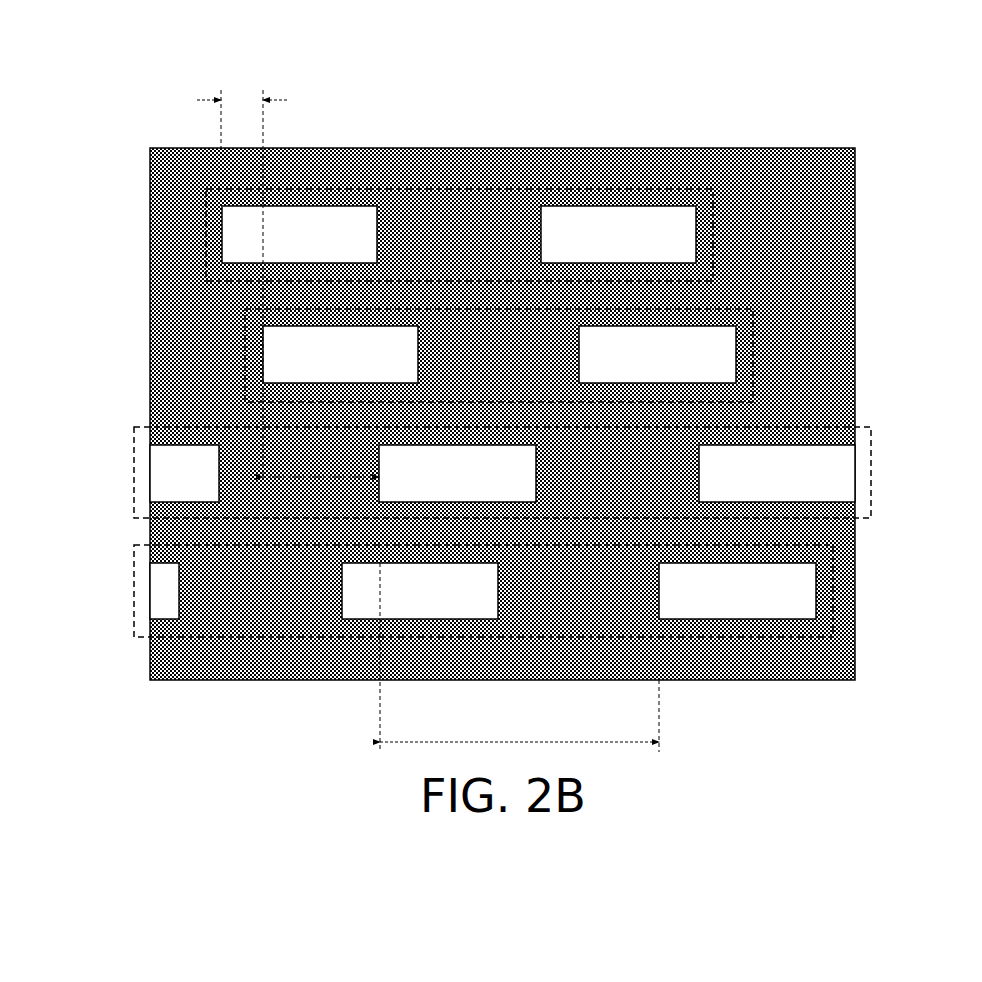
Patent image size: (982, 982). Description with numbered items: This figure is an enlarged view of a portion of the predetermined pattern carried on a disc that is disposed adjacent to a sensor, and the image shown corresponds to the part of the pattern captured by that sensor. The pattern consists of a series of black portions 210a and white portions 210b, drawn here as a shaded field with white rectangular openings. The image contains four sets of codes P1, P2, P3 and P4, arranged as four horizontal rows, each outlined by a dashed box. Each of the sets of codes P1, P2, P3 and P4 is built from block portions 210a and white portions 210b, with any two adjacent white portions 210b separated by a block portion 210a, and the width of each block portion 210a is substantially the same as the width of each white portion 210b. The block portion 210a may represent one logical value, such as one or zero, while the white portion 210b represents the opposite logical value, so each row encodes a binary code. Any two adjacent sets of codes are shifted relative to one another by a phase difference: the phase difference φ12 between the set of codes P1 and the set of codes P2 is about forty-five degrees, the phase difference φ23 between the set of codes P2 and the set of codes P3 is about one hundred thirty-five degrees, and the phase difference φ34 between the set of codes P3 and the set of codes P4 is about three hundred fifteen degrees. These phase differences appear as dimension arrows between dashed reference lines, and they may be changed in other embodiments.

The black portion 210a is at (160, 338).
The white portion 210b is at (237, 237).
The first set of codes P1 is at (713, 227).
The second set of codes P2 is at (753, 346).
The third set of codes P3 is at (871, 465).
The fourth set of codes P4 is at (833, 583).
The phase difference φ 12 is at (242, 104).
The phase difference φ 23 is at (321, 312).
The phase difference φ 34 is at (519, 657).